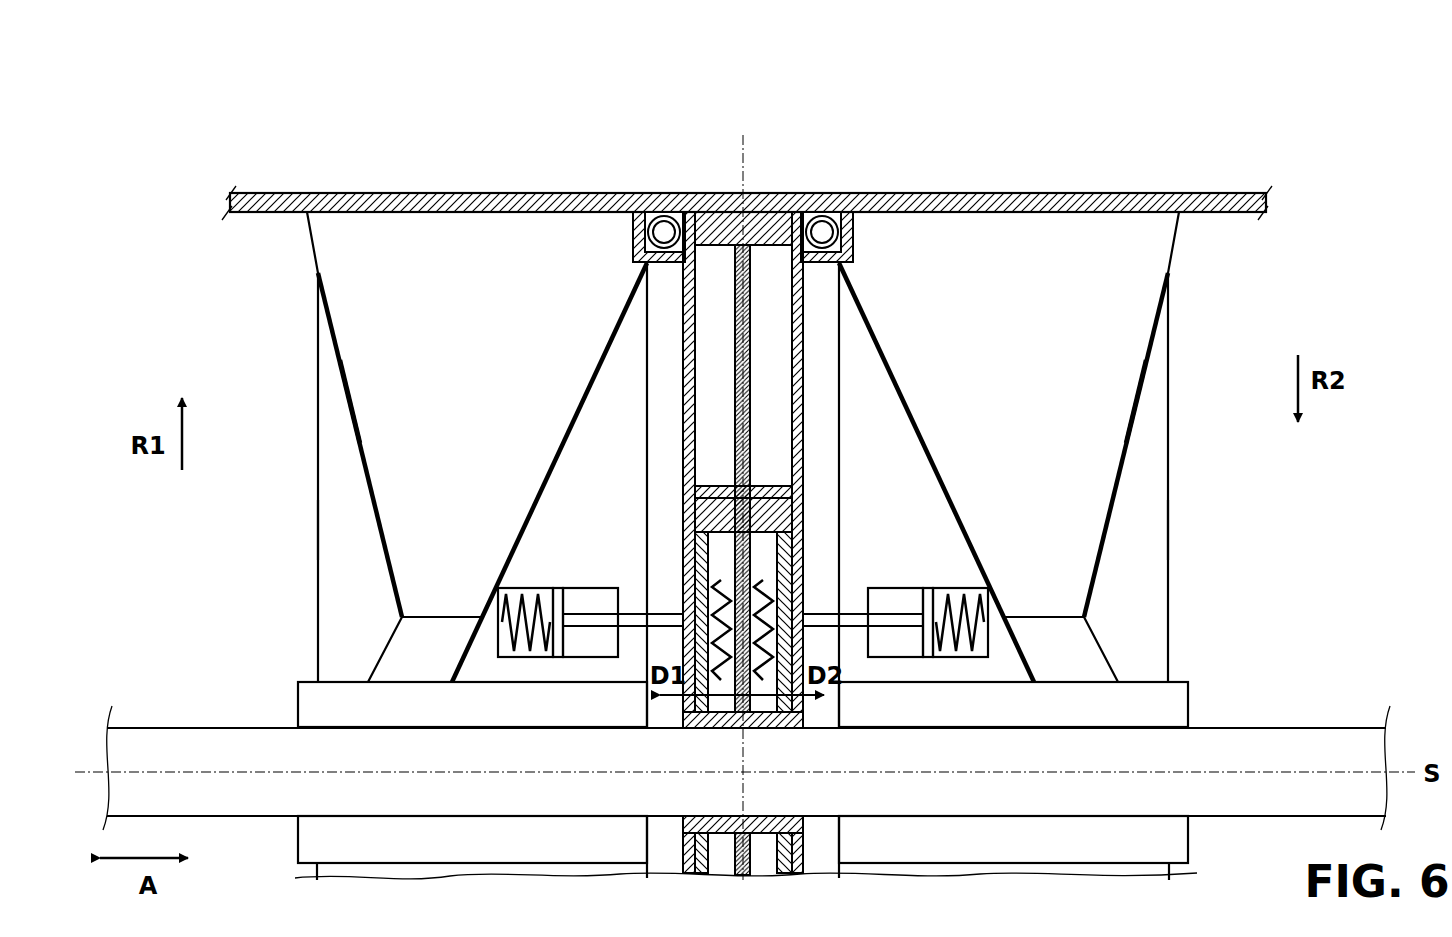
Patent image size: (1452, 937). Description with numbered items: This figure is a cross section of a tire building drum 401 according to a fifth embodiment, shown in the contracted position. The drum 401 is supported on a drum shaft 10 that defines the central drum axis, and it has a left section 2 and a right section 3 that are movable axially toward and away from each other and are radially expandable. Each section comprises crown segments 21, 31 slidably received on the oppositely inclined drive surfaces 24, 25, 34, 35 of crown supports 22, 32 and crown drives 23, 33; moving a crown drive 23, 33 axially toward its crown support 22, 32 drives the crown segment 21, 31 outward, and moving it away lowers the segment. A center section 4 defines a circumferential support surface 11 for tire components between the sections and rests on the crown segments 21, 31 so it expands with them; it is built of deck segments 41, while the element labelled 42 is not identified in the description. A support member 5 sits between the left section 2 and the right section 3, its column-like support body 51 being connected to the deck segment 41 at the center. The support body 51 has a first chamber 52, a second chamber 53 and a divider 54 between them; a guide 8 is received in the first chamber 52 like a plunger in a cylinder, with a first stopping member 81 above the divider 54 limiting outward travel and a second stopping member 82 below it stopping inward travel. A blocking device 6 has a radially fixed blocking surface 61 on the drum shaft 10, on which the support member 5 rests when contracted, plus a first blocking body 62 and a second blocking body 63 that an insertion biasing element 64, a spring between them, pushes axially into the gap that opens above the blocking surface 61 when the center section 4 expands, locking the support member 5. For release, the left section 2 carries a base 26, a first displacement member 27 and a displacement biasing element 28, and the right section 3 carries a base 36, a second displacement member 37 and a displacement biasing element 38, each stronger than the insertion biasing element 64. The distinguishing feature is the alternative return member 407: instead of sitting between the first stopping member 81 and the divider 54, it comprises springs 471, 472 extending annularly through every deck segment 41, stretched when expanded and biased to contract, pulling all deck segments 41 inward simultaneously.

The tire building drum 401 is at (181, 108).
The alternative return member 407 is at (617, 87).
The spring 471 is at (667, 193).
The spring 472 is at (838, 193).
The center section 4 is at (565, 193).
The circumferential support surface 11 is at (490, 193).
The deck segment 41 is at (867, 193).
The plate right portion 42 is at (985, 193).
The first stopping member 81 is at (780, 193).
The guide 8 is at (750, 372).
The second stopping member 82 is at (770, 510).
The support member 5 is at (746, 495).
The support body 51 is at (688, 318).
The first chamber 52 is at (718, 288).
The second chamber 53 is at (700, 555).
The divider 54 is at (718, 490).
The blocking device 6 is at (672, 712).
The blocking surface 61 is at (745, 728).
The first blocking body 62 is at (710, 728).
The second blocking body 63 is at (785, 728).
The insertion biasing element 64 is at (720, 598).
The left section 2 is at (455, 546).
The crown segment 21 is at (318, 275).
The crown support 22 is at (345, 530).
The crown drive 23 is at (315, 705).
The drive surface 24 is at (358, 443).
The drive surface 25 is at (557, 457).
The base 26 is at (572, 651).
The first displacement member 27 is at (597, 620).
The displacement biasing element 28 is at (510, 635).
The right section 3 is at (1051, 546).
The crown segment 31 is at (1170, 290).
The crown support 32 is at (1155, 543).
The crown drive 33 is at (1175, 708).
The drive surface 34 is at (1140, 487).
The drive surface 35 is at (929, 457).
The base 36 is at (917, 653).
The second displacement member 37 is at (852, 622).
The displacement biasing element 38 is at (978, 632).
The drum shaft 10 is at (148, 745).